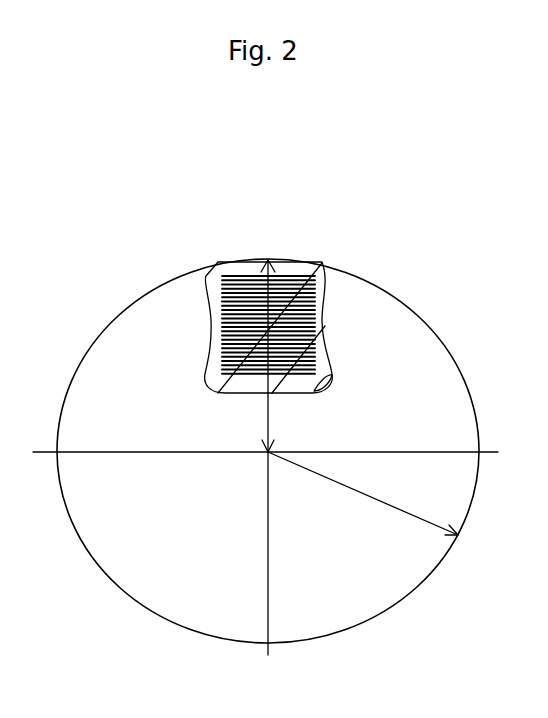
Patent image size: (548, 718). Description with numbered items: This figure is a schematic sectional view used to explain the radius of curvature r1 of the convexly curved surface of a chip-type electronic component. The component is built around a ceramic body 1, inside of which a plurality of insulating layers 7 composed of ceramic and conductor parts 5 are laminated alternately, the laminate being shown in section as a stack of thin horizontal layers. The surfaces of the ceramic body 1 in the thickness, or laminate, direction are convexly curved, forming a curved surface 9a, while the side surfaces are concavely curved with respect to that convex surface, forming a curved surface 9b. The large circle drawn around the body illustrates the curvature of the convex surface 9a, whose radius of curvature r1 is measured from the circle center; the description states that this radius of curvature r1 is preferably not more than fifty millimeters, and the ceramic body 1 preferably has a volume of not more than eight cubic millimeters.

The ceramic body 1 is at (325, 264).
The conductor part 5 is at (232, 262).
The insulating layer 7 is at (213, 288).
The convexly curved surface 9a is at (272, 259).
The concavely curved surface 9b is at (213, 340).
The radius of curvature r1 is at (270, 418).